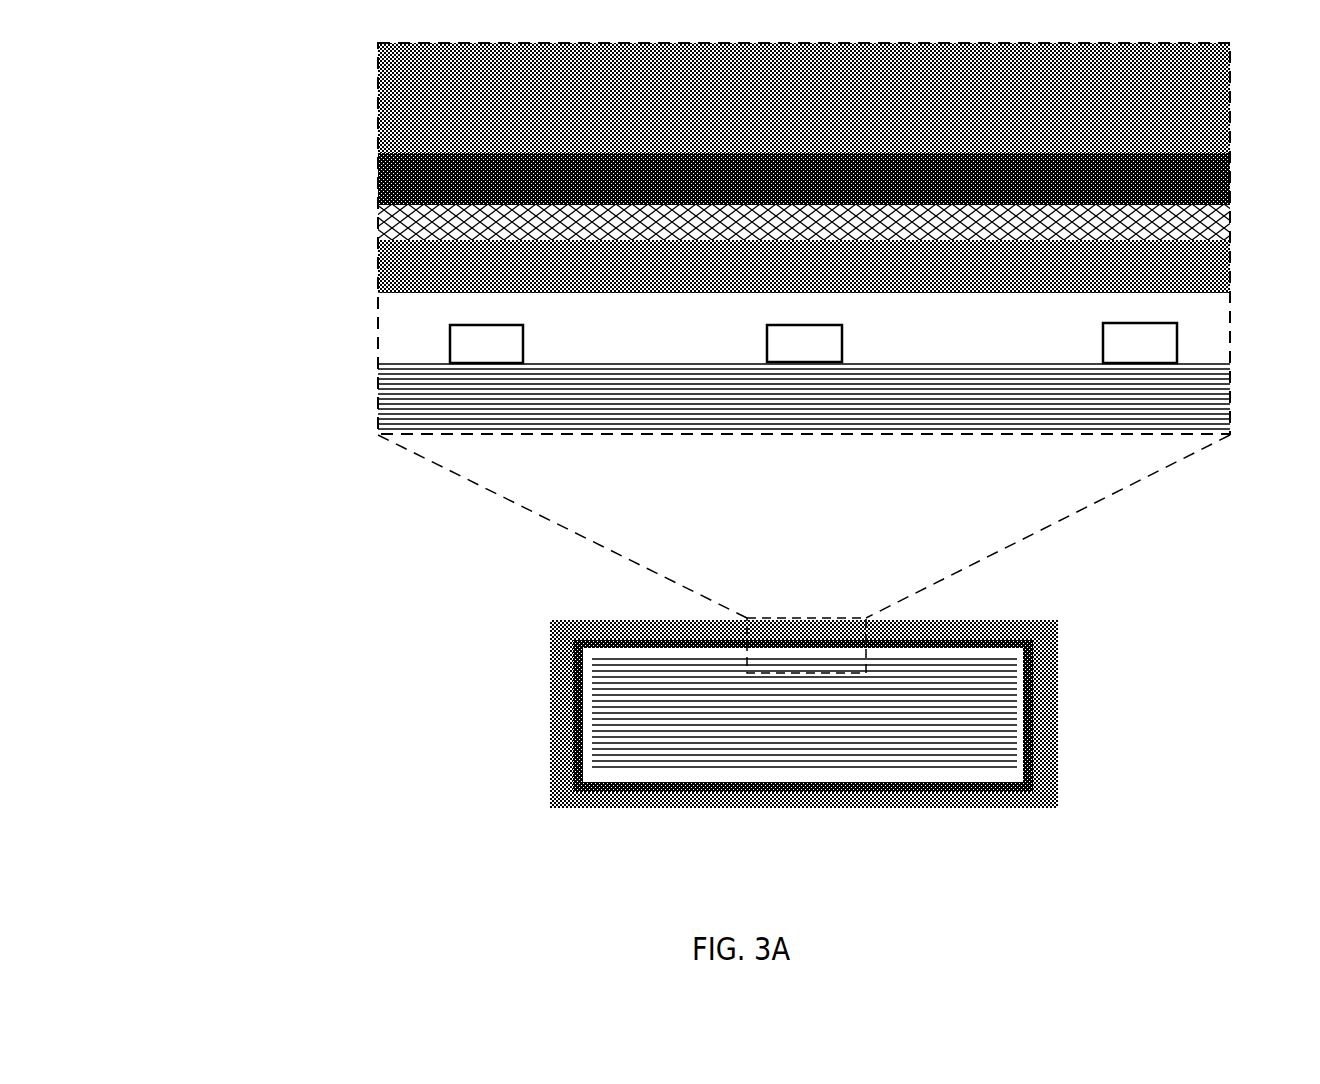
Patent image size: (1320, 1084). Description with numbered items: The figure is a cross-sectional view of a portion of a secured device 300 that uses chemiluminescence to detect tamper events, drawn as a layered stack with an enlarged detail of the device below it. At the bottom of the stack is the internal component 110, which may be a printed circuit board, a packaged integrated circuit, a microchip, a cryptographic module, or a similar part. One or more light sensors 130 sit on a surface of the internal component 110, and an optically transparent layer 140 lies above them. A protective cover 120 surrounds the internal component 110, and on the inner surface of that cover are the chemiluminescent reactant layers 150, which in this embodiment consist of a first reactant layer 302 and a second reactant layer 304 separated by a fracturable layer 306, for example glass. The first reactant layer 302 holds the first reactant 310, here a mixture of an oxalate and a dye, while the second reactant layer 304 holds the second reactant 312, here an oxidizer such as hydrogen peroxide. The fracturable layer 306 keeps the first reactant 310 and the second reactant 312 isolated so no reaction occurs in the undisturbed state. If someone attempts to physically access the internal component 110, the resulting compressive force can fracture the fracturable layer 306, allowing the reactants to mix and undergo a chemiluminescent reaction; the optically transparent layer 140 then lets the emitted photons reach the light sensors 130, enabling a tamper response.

The internal component 110 is at (1030, 409).
The protective cover 120 is at (804, 98).
The light sensors 130 is at (502, 354).
The optically transparent layer 140 is at (753, 322).
The chemiluminescent reactant layers 150 is at (848, 223).
The secured device 300 is at (1104, 592).
The first reactant layer 302 is at (903, 191).
The second reactant layer 304 is at (903, 279).
The fracturable layer 306 is at (903, 236).
The first reactant 310 is at (415, 180).
The second reactant 312 is at (408, 259).